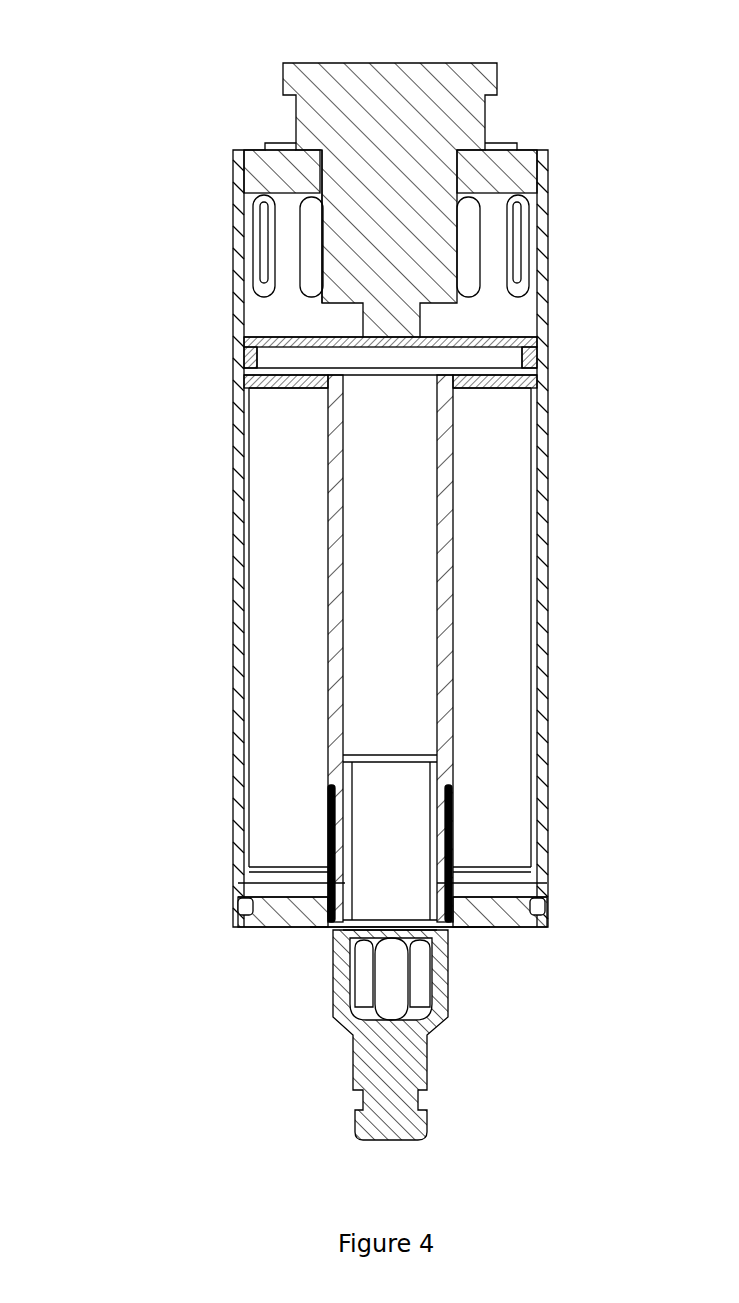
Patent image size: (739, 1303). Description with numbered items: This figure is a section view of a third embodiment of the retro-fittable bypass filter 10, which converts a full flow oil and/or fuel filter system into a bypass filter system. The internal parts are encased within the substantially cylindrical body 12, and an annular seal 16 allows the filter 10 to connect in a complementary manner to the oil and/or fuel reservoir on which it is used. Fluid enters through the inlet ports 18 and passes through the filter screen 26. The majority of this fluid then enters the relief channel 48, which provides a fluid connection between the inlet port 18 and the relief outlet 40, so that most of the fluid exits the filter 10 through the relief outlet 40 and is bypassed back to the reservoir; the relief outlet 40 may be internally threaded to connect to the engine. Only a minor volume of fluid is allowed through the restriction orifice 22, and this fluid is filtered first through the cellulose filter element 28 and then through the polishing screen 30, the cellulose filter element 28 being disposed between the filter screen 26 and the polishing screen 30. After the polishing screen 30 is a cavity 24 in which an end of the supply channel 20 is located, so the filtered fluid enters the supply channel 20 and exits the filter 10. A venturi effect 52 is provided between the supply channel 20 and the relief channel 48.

The retro-fittable bypass filter 10 is at (95, 80).
The body 12 is at (547, 590).
The annular seal 16 is at (423, 1095).
The inlet port 18 is at (515, 260).
The supply channel 20 is at (330, 905).
The restriction orifice 22 is at (287, 377).
The cavity 24 is at (488, 890).
The filter screen 26 is at (257, 343).
The cellulose filter element 28 is at (513, 717).
The polishing screen 30 is at (237, 900).
The relief outlet 40 is at (390, 992).
The relief channel 48 is at (403, 525).
The venturi effect 52 is at (330, 927).